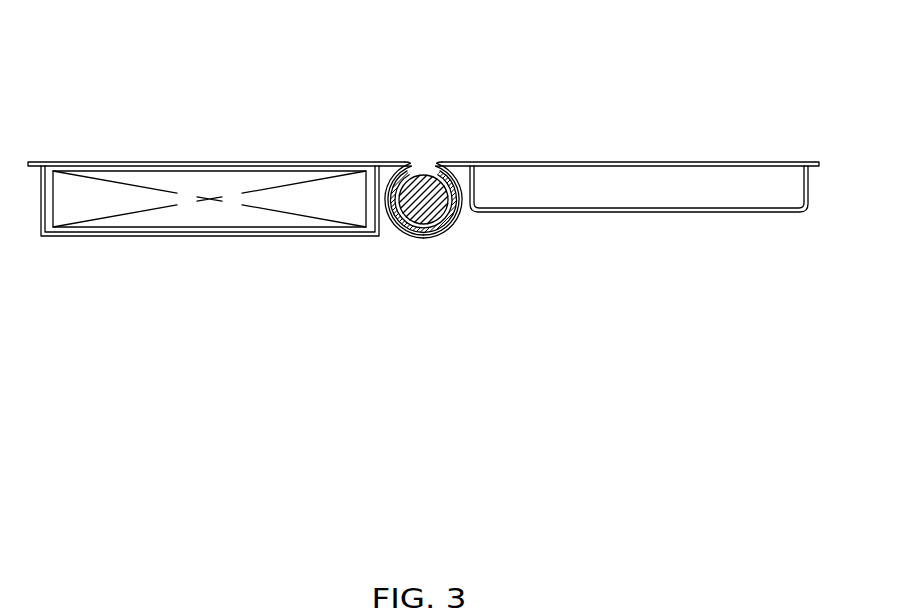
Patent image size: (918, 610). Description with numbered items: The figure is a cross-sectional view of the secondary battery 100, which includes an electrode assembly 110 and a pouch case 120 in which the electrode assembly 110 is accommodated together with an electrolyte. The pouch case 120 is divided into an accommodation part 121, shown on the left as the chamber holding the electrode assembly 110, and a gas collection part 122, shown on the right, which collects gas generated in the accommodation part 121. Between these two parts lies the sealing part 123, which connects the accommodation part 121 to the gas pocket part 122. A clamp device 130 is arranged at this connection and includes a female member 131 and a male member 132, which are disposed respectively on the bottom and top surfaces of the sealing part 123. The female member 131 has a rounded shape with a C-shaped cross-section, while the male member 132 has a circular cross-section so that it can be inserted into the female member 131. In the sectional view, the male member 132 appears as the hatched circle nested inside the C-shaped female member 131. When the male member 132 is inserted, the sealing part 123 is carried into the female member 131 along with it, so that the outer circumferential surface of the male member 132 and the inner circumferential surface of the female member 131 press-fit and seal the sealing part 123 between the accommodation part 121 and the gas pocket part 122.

The secondary battery 100 is at (678, 94).
The electrode assembly 110 is at (203, 178).
The pouch case 120 is at (423, 135).
The accommodation part 121 is at (343, 163).
The gas collection part 122 is at (492, 163).
The sealing part 123 is at (412, 165).
The clamp device 130 is at (428, 239).
The female member 131 is at (421, 208).
The male member 132 is at (413, 236).